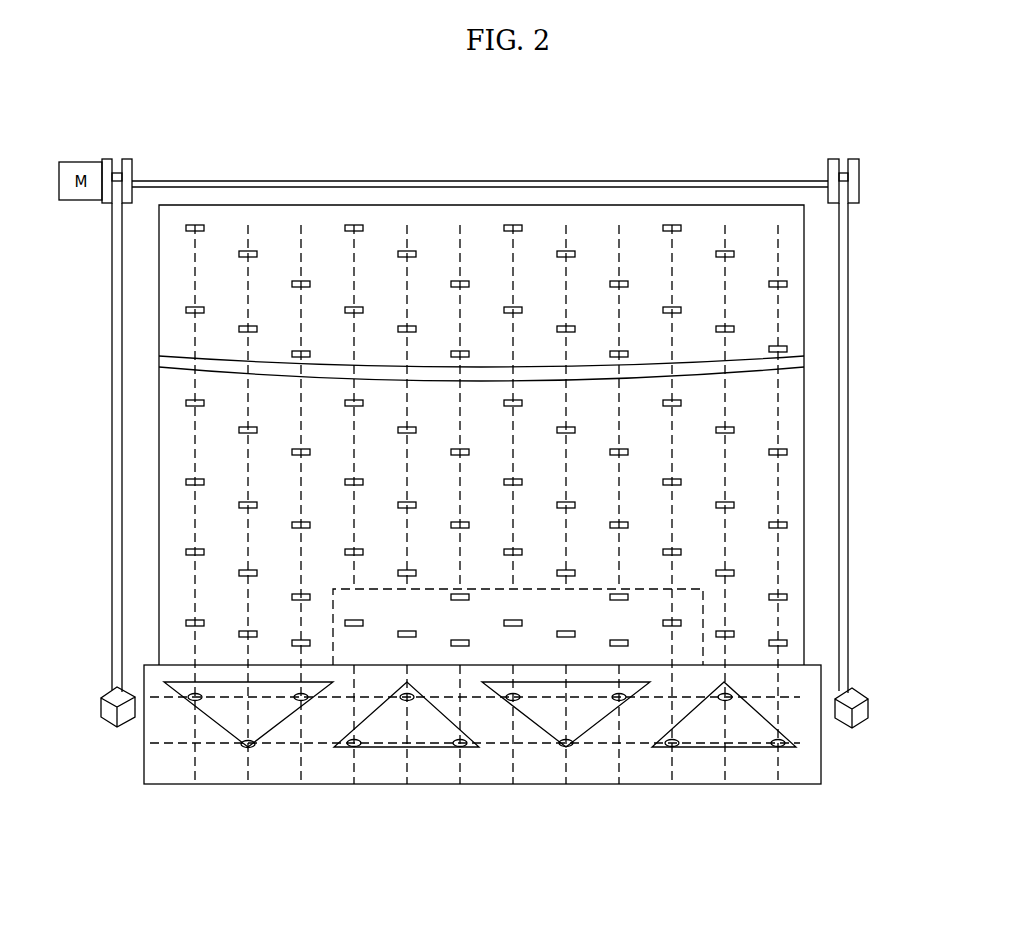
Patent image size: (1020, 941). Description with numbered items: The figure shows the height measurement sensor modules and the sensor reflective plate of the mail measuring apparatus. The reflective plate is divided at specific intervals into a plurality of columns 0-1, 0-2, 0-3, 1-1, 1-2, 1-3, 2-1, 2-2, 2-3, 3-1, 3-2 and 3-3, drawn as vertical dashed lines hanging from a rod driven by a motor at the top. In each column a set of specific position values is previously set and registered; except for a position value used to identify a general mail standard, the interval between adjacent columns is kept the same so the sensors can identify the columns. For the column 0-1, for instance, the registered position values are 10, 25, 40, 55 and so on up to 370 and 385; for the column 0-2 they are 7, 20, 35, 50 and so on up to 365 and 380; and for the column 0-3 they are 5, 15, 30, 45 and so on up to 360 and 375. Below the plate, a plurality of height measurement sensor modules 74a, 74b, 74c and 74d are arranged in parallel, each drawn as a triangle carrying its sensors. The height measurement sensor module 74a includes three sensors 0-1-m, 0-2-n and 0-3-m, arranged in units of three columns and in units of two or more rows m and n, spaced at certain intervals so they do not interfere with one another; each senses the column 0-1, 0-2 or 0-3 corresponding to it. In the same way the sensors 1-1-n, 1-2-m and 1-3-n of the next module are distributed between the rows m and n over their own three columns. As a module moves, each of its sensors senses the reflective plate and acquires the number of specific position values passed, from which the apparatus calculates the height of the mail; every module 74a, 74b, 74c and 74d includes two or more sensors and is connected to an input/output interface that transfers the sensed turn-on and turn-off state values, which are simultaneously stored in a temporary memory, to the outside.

The specific position value 385 is at (434, 241).
The specific position value 380 is at (485, 272).
The specific position value 375 is at (540, 285).
The specific position value 370 is at (434, 300).
The specific position value 365 is at (487, 340).
The specific position value 360 is at (540, 337).
The specific position value 55 is at (423, 395).
The specific position value 50 is at (479, 420).
The specific position value 45 is at (531, 462).
The specific position value 40 is at (423, 473).
The specific position value 35 is at (479, 497).
The specific position value 30 is at (531, 535).
The specific position value 25 is at (423, 544).
The specific position value 20 is at (477, 581).
The specific position value 15 is at (531, 606).
The specific position value 10 is at (423, 614).
The specific position value 7 is at (481, 645).
The specific position value 5 is at (534, 653).
The height measurement sensor module 74a is at (180, 682).
The height measurement sensor module 74b is at (472, 752).
The height measurement sensor module 74c is at (543, 740).
The height measurement sensor module 74d is at (697, 748).
The column 0-1 is at (195, 226).
The column 0-2 is at (248, 226).
The column 0-3 is at (301, 226).
The column 1-1 is at (354, 226).
The column 1-2 is at (407, 226).
The column 1-3 is at (460, 226).
The column 2-1 is at (513, 226).
The column 2-2 is at (566, 226).
The column 2-3 is at (619, 226).
The column 3-1 is at (672, 226).
The column 3-2 is at (725, 226).
The column 3-3 is at (778, 226).
The sensor 0-1-m is at (193, 704).
The sensor 0-2-n is at (247, 750).
The sensor 0-3-m is at (303, 704).
The sensor 1-1-n is at (350, 750).
The sensor 1-2-m is at (404, 718).
The sensor 1-3-n is at (455, 750).
The row m is at (483, 697).
The row n is at (482, 743).